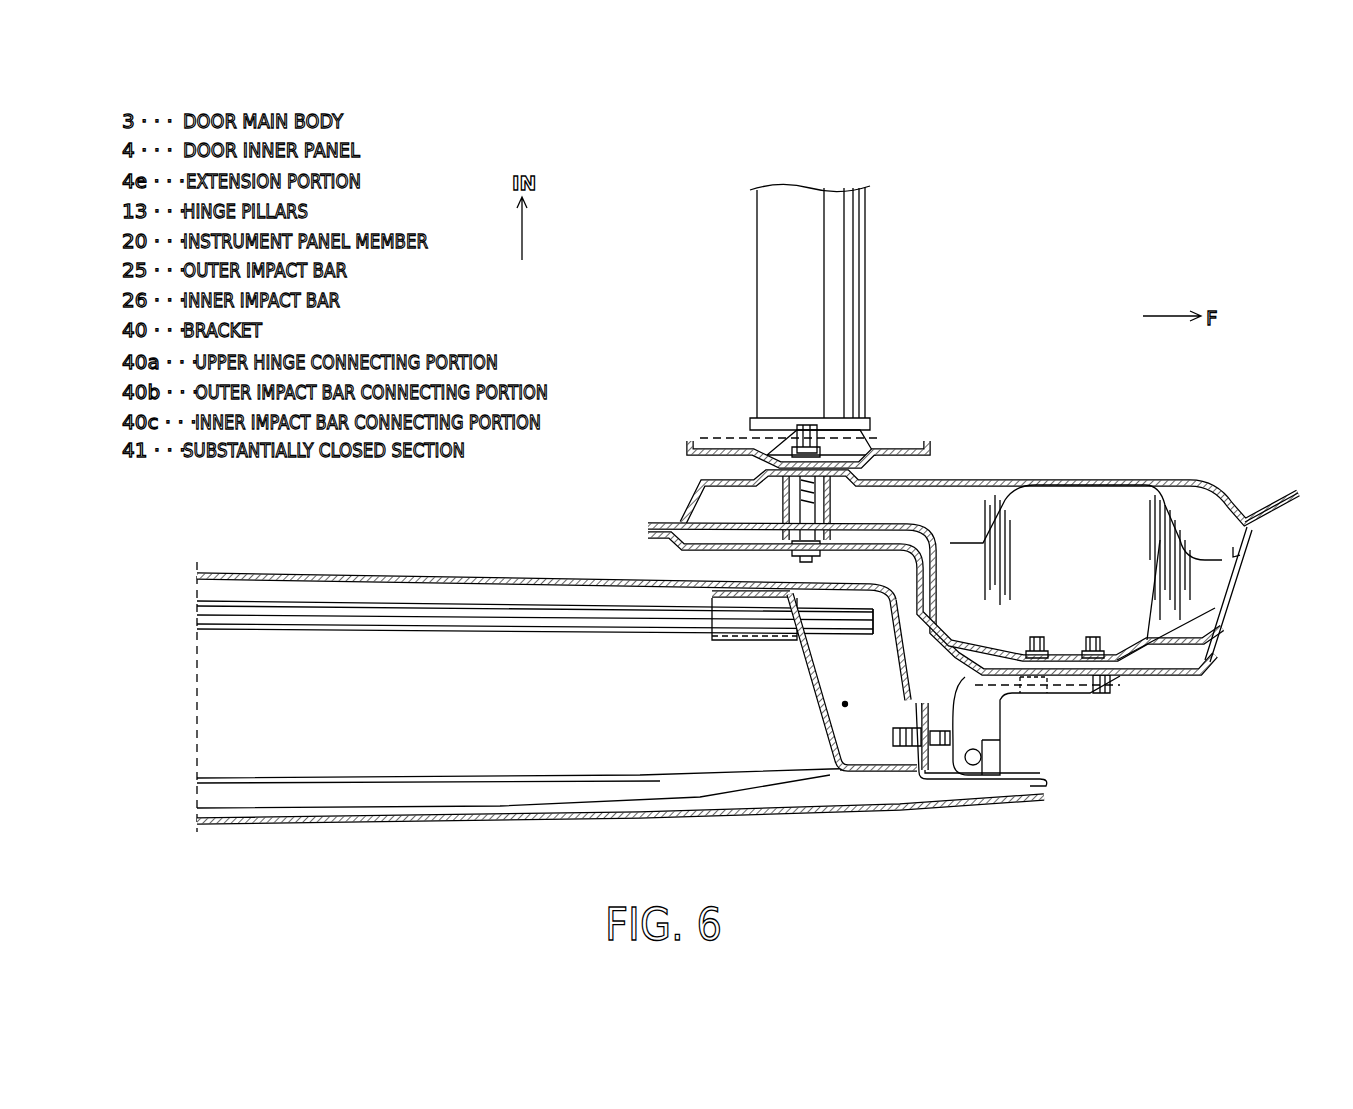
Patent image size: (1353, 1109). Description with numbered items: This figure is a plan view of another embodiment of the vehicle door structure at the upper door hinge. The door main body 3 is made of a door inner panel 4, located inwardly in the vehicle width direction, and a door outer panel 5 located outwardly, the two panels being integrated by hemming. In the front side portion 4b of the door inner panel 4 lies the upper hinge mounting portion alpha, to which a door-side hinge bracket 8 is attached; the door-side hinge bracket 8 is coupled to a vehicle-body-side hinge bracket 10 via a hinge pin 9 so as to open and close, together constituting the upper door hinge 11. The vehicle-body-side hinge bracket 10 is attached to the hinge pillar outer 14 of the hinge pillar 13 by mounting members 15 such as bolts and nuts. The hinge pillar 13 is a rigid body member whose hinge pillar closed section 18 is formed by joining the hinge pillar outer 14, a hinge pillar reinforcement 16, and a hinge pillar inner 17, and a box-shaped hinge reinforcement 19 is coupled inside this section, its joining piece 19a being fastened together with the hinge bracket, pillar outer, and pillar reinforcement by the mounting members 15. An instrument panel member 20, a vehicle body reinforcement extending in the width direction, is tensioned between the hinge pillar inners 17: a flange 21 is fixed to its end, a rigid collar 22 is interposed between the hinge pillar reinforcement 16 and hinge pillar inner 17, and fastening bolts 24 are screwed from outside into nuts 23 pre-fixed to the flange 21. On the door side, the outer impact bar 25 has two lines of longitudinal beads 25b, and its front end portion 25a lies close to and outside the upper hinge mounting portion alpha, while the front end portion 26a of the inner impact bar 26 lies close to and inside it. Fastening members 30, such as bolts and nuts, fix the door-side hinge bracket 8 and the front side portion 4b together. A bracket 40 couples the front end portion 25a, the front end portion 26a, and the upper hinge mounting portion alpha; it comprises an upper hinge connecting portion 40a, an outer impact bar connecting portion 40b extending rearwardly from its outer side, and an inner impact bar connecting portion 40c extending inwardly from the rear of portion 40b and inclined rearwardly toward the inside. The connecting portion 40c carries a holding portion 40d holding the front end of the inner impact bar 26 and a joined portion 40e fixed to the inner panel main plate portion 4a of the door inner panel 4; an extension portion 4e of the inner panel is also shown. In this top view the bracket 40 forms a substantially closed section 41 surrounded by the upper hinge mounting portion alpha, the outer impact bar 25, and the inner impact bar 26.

The door main body 3 is at (256, 547).
The door inner panel 4 is at (622, 692).
The inner panel main plate portion 4a is at (465, 574).
The front side portion 4b is at (902, 633).
The extension portion 4e is at (937, 782).
The door outer panel 5 is at (526, 826).
The door-side hinge bracket 8 is at (1003, 776).
The hinge pin 9 is at (981, 757).
The vehicle-body-side hinge bracket 10 is at (1008, 712).
The upper door hinge 11 is at (1058, 749).
The hinge pillar 13 is at (973, 549).
The hinge pillar outer 14 is at (1158, 673).
The mounting members 15 is at (1093, 637).
The hinge pillar reinforcement 16 is at (916, 534).
The hinge pillar inner 17 is at (978, 476).
The hinge pillar closed section 18 is at (1205, 505).
The hinge reinforcement 19 is at (1086, 527).
The joining piece 19a is at (1118, 622).
The instrument panel member 20 is at (757, 296).
The flange 21 is at (686, 447).
The collar 22 is at (783, 505).
The nuts 23 is at (790, 450).
The fastening bolts 24 is at (806, 550).
The outer impact bar 25 is at (558, 794).
The front end portion of the outer impact bar 25a is at (887, 775).
The beads 25b is at (360, 800).
The inner impact bar 26 is at (632, 616).
The front end portion of the inner impact bar 26a is at (880, 598).
The fastening members 30 is at (893, 735).
The bracket 40 is at (770, 734).
The upper hinge connecting portion 40a is at (918, 712).
The outer impact bar connecting portion 40b is at (867, 772).
The inner impact bar connecting portion 40c is at (815, 718).
The holding portion 40d is at (725, 640).
The joined portion 40e is at (736, 598).
The substantially closed section 41 is at (845, 705).
The upper hinge mounting portion alpha is at (949, 705).